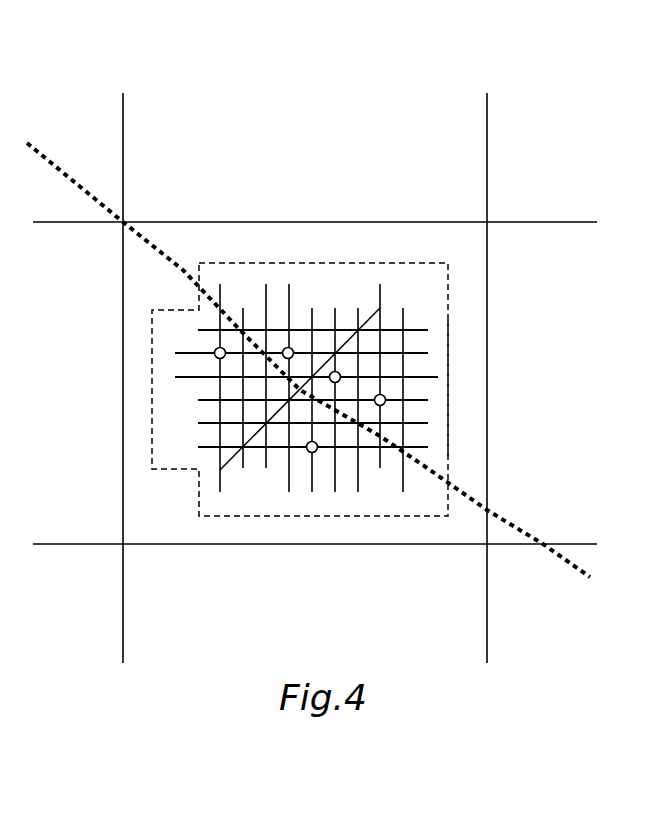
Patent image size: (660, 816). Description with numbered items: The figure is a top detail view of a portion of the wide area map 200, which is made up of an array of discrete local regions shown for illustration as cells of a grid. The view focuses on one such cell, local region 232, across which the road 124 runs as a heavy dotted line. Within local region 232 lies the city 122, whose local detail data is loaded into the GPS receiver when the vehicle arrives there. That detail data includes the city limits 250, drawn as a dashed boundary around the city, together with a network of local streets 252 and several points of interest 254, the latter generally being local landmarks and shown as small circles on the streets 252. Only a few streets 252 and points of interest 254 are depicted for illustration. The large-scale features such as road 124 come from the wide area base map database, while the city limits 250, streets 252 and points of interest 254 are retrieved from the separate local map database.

The wide area map 200 is at (217, 138).
The road 124 is at (73, 185).
The city 122 is at (322, 267).
The local region 232 is at (400, 228).
The city limits 250 is at (448, 389).
The local streets 252 is at (183, 352).
The points of interest 254 is at (215, 348).